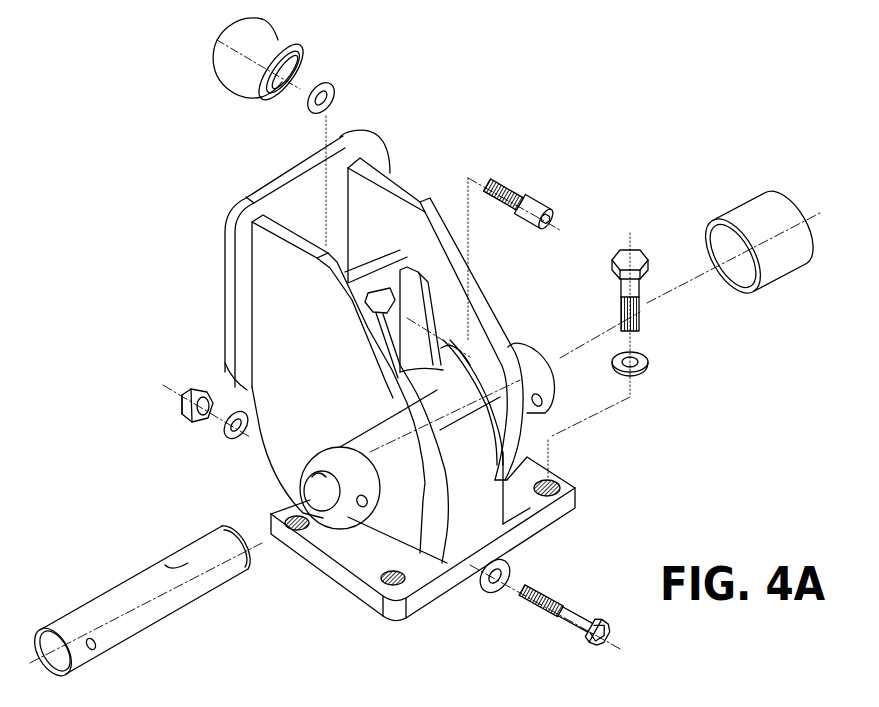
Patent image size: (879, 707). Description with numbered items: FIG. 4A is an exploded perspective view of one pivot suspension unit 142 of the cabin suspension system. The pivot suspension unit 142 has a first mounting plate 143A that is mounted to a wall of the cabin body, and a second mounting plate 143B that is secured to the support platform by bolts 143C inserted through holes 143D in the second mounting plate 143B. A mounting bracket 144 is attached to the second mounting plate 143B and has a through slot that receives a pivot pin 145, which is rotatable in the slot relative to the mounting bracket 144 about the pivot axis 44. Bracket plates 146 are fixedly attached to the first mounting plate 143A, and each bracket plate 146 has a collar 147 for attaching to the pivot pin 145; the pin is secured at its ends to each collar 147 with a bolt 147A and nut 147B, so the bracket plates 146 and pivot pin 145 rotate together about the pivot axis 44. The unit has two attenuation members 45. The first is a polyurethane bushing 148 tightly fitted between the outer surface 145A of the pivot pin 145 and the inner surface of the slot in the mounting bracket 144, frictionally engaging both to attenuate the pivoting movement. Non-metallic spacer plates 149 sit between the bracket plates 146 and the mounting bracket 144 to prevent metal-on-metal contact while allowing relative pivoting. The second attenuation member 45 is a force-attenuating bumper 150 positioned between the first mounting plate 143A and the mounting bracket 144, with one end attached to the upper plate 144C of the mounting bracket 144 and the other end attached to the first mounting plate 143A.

The pivot axis 44 is at (257, 533).
The attenuation member 45 is at (468, 160).
The pivot suspension unit 142 is at (461, 107).
The first mounting plate 143A is at (225, 255).
The second mounting plate 143B is at (307, 558).
The bolt 143C is at (633, 250).
The hole 143D is at (557, 490).
The mounting bracket 144 is at (492, 522).
The upper plate 144C is at (377, 250).
The pivot pin 145 is at (110, 587).
The outer surface 145A is at (172, 565).
The bracket plate 146 is at (410, 187).
The collar 147 is at (532, 348).
The bolt 147A is at (545, 617).
The nut 147B is at (182, 408).
The polyurethane bushing 148 is at (787, 194).
The spacer plate 149 is at (442, 555).
The force-attenuating bumper 150 is at (217, 88).